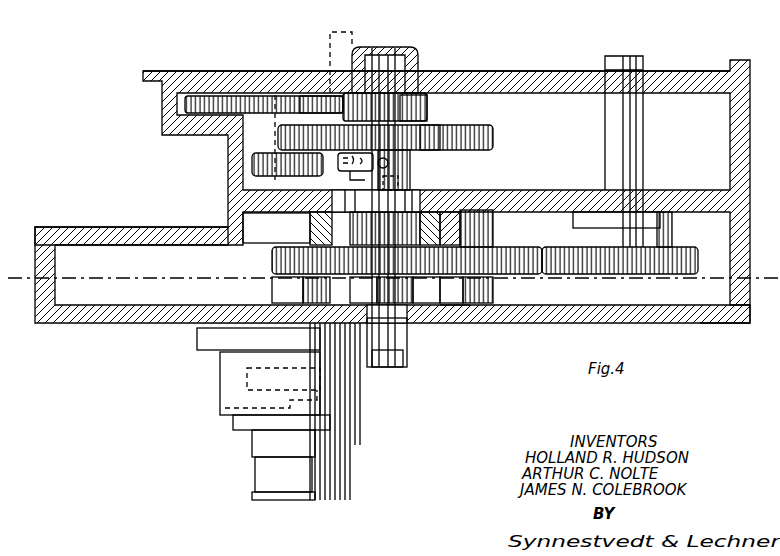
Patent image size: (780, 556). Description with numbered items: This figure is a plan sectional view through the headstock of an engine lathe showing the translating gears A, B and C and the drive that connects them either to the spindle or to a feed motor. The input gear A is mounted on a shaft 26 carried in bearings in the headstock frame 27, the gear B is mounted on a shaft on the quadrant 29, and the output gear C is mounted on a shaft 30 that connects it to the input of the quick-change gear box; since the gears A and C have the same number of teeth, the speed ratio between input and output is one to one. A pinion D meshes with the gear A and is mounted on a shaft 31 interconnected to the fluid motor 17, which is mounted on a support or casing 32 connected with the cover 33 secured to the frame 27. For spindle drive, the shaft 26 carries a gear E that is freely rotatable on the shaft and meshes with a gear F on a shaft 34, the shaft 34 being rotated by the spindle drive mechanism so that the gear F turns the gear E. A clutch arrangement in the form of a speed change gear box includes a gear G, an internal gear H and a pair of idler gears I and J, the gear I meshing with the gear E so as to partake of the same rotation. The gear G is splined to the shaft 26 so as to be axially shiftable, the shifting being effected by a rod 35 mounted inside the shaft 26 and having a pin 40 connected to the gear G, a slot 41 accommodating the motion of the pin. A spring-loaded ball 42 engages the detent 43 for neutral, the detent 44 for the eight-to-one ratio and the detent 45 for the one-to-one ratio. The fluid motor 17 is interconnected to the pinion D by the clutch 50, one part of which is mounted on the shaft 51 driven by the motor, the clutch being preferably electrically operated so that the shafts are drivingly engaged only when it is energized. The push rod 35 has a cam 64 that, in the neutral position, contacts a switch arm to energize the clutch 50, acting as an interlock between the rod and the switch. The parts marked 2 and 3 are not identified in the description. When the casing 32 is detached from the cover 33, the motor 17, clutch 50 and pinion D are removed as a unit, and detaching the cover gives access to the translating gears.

The housing top plate 2 is at (234, 62).
The lower housing 3 is at (22, 305).
The fluid motor 17 is at (265, 477).
The shaft 26 is at (393, 52).
The headstock frame 27 is at (518, 82).
The quadrant 29 is at (494, 226).
The shaft 30 is at (638, 58).
The shaft 31 is at (295, 277).
The support or casing 32 is at (208, 338).
The cover 33 is at (718, 323).
The shaft 34 is at (350, 38).
The rod 35 is at (403, 325).
The pin 40 is at (400, 164).
The slot 41 is at (408, 176).
The spring-loaded ball 42 is at (352, 170).
The detent 43 is at (370, 177).
The detent 44 is at (398, 183).
The detent 45 is at (341, 114).
The clutch 50 is at (247, 368).
The shaft 51 is at (225, 408).
The cam 64 is at (395, 360).
The input gear A is at (446, 312).
The gear B is at (517, 278).
The output gear C is at (580, 265).
The pinion D is at (270, 256).
The gear E is at (428, 126).
The gear F is at (335, 95).
The gear G is at (496, 137).
The internal gear H is at (438, 128).
The idler gear I is at (185, 107).
The idler gear J is at (262, 165).